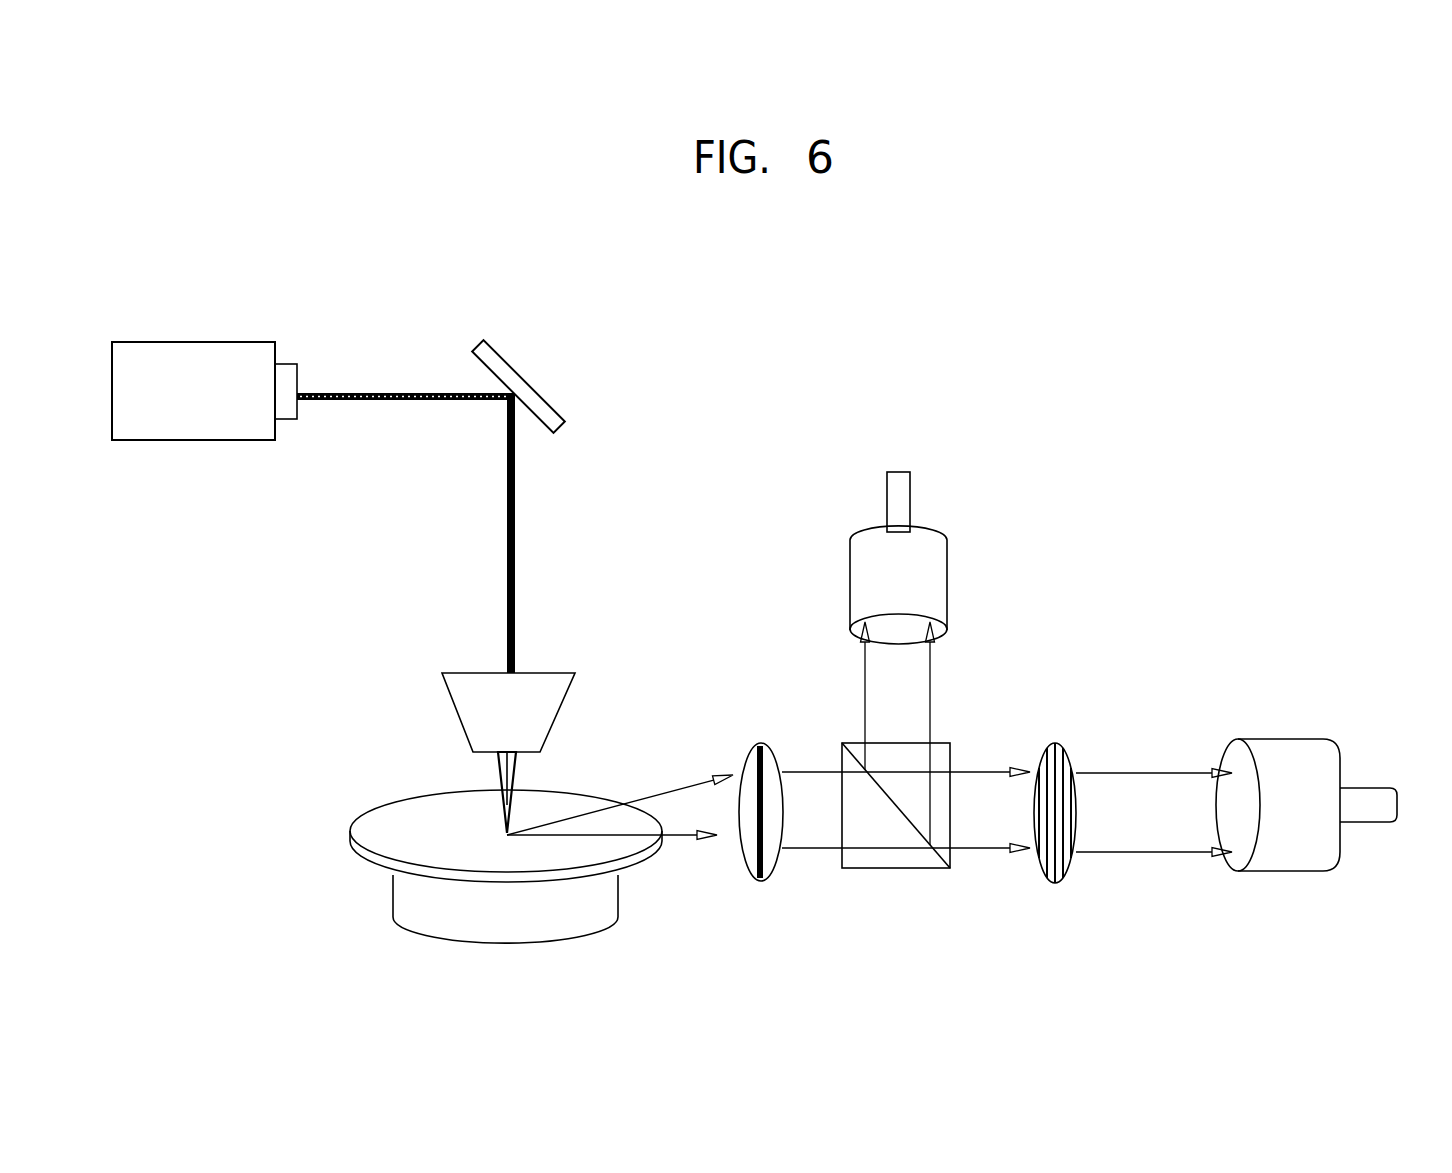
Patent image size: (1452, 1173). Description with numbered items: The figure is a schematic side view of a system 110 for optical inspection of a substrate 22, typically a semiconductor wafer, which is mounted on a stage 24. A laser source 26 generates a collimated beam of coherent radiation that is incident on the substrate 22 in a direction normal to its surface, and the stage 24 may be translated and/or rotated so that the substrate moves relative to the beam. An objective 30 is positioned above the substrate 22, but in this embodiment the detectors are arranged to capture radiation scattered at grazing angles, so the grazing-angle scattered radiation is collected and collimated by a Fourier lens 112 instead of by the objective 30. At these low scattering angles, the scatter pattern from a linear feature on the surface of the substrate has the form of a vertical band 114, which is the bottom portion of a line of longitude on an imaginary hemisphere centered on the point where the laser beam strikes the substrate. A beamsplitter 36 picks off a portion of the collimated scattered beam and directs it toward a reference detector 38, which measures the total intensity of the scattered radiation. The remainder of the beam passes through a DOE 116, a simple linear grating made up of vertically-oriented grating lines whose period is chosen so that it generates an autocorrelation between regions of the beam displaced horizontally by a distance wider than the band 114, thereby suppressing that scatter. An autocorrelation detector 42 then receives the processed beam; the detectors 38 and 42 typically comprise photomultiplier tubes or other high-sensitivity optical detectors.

The laser source 26 is at (205, 342).
The objective 30 is at (567, 695).
The substrate 22 is at (352, 826).
The stage 24 is at (393, 880).
The Fourier lens 112 is at (771, 752).
The vertical band 114 is at (748, 864).
The beamsplitter 36 is at (888, 744).
The reference detector 38 is at (947, 558).
The diffractive optical element (DOE) 116 is at (1054, 742).
The autocorrelation detector 42 is at (1274, 739).
The system for optical inspection 110 is at (1336, 503).